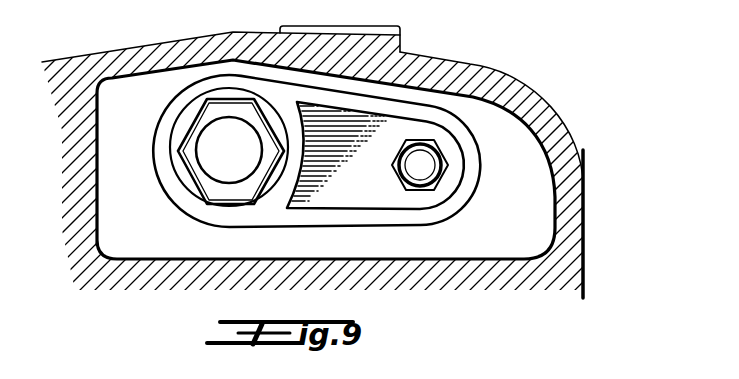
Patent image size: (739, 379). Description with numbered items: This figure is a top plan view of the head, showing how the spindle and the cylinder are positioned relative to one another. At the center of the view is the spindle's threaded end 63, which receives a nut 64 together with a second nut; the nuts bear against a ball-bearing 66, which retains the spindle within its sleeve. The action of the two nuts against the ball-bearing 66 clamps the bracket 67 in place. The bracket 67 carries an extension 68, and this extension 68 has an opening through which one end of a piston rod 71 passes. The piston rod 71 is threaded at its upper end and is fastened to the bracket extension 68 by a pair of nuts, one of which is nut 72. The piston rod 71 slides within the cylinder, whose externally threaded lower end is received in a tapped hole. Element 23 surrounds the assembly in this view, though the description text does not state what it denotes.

The housing 23 is at (570, 201).
The threaded end 63 is at (213, 151).
The nut 64 is at (193, 123).
The ball-bearing 66 is at (222, 208).
The bracket 67 is at (393, 110).
The bracket extension 68 is at (458, 200).
The piston rod 71 is at (422, 165).
The nut 72 is at (402, 176).